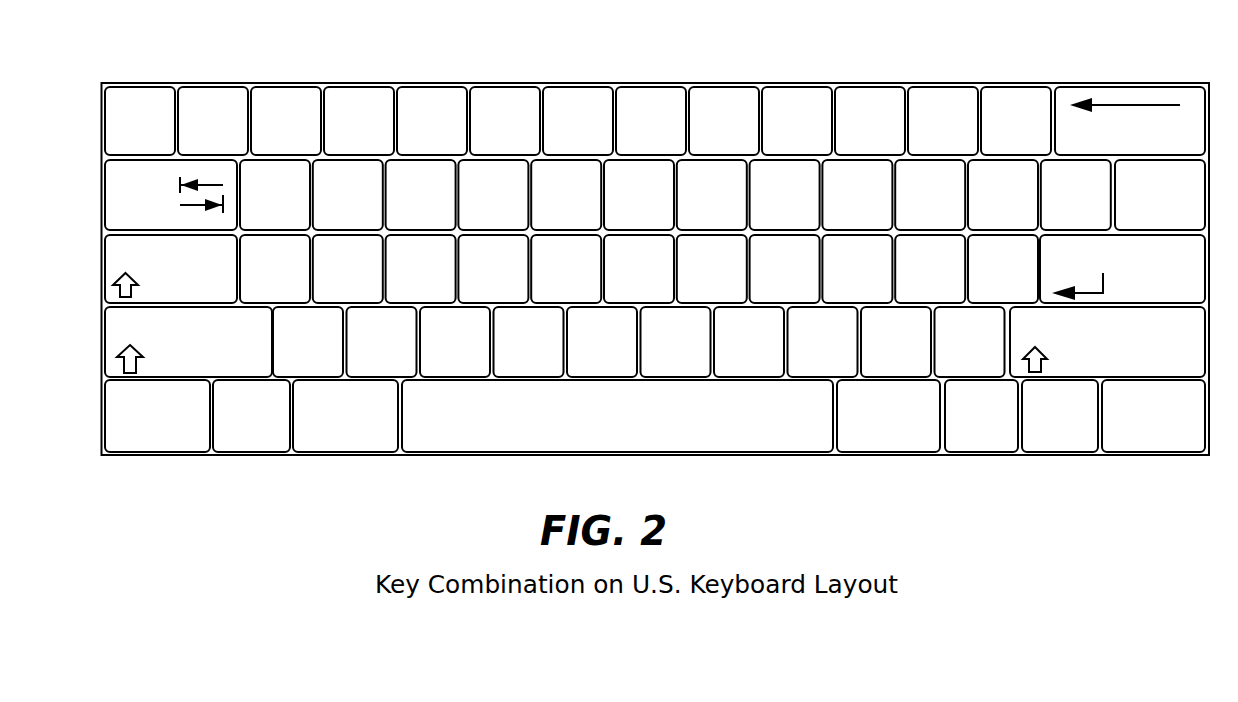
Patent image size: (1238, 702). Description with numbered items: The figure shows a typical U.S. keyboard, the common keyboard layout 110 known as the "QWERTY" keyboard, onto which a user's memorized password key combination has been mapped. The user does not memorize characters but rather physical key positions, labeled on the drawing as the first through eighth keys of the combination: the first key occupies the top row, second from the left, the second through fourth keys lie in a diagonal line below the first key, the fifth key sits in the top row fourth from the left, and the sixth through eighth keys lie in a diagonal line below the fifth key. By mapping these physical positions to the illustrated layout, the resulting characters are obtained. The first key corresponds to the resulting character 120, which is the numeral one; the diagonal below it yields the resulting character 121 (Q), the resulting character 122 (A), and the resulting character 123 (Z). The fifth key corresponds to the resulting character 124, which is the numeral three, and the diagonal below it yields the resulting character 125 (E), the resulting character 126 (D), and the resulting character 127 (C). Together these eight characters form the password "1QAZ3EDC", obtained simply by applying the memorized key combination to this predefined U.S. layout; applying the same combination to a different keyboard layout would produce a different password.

The keyboard layout 110 is at (637, 313).
The resulting character 120 is at (217, 98).
The resulting character 124 is at (367, 98).
The resulting character 121 is at (307, 201).
The resulting character 122 is at (307, 275).
The resulting character 123 is at (337, 351).
The resulting character 125 is at (454, 201).
The resulting character 126 is at (454, 275).
The resulting character 127 is at (484, 351).